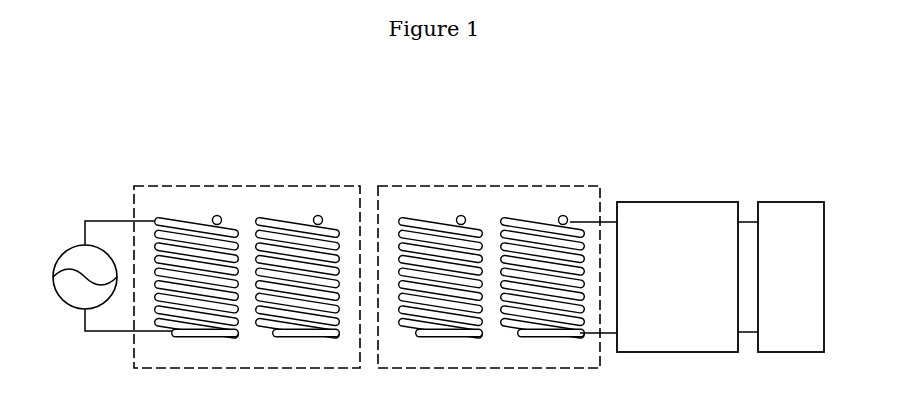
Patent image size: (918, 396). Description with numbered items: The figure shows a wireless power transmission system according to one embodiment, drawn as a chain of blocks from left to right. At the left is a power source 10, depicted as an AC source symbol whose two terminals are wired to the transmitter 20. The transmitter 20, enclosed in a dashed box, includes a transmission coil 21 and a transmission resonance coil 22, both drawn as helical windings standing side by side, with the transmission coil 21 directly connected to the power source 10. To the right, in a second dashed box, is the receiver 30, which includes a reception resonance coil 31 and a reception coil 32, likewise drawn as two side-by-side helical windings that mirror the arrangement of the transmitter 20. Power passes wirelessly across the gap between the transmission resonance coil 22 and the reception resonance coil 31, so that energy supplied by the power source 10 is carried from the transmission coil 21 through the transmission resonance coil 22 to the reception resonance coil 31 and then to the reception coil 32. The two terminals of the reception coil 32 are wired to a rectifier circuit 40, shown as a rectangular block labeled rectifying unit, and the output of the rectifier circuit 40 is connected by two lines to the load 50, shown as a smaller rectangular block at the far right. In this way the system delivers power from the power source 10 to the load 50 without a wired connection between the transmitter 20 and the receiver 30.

The power source 10 is at (64, 251).
The transmitter 20 is at (160, 184).
The transmission coil 21 is at (203, 226).
The transmission resonance coil 22 is at (298, 226).
The receiver 30 is at (480, 184).
The reception resonance coil 31 is at (420, 226).
The reception coil 32 is at (530, 226).
The rectifier circuit 40 is at (678, 201).
The load 50 is at (792, 201).